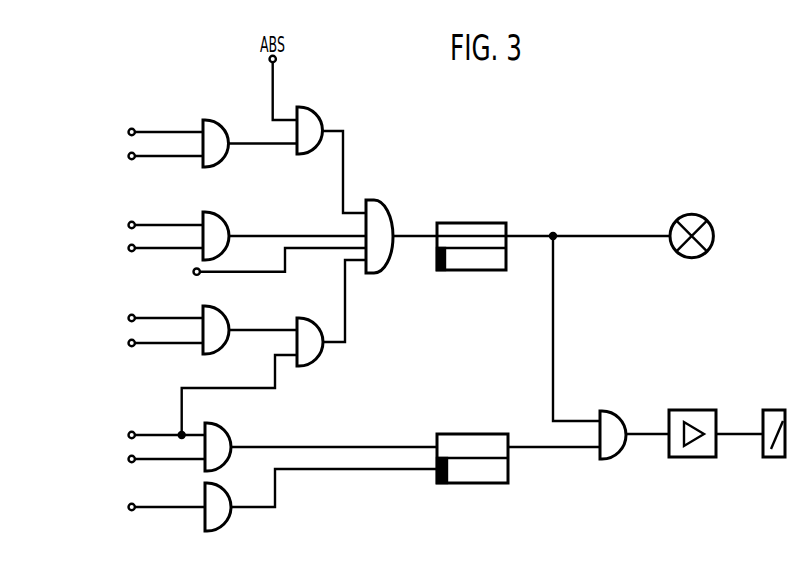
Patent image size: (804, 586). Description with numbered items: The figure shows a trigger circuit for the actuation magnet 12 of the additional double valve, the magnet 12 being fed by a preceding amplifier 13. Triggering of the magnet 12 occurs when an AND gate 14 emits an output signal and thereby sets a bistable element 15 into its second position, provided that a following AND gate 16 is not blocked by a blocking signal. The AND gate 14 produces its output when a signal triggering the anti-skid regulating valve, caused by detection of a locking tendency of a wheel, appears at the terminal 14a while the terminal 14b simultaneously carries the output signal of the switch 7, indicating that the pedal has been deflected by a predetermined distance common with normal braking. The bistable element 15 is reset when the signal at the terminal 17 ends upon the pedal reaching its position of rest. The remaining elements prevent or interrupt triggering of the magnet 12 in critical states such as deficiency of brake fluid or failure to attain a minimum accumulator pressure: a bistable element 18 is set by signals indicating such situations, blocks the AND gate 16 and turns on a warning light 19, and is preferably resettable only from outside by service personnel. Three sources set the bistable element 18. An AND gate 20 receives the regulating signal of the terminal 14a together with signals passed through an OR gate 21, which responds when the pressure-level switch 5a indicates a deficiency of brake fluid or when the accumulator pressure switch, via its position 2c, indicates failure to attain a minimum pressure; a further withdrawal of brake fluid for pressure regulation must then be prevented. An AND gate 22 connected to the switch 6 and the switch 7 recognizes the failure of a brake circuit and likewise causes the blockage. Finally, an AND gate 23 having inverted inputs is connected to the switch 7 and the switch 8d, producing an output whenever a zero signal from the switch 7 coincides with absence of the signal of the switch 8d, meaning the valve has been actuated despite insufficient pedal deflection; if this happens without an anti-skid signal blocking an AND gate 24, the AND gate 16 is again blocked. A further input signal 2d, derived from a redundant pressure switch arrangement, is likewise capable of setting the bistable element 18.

The AND gate having inverted inputs 23 is at (210, 132).
The AND gate 24 is at (308, 128).
The AND gate 22 is at (217, 228).
The OR gate 21 is at (215, 313).
The AND gate 20 is at (313, 350).
The bistable element 18 is at (493, 237).
The warning light 19 is at (693, 228).
The AND gate 16 is at (610, 428).
The bistable element 15 is at (482, 445).
The AND gate 14 is at (218, 442).
The amplifier 13 is at (693, 418).
The actuation magnet 12 is at (773, 418).
The terminal 17 is at (133, 512).
The switch 7 is at (129, 100).
The switch 8d is at (131, 160).
The switch 6 is at (124, 223).
The output signal 2d is at (267, 265).
The pressure-level switch 5a is at (138, 300).
The pressure switch position 2c is at (131, 348).
The terminal 14a is at (135, 410).
The terminal 14b is at (133, 465).